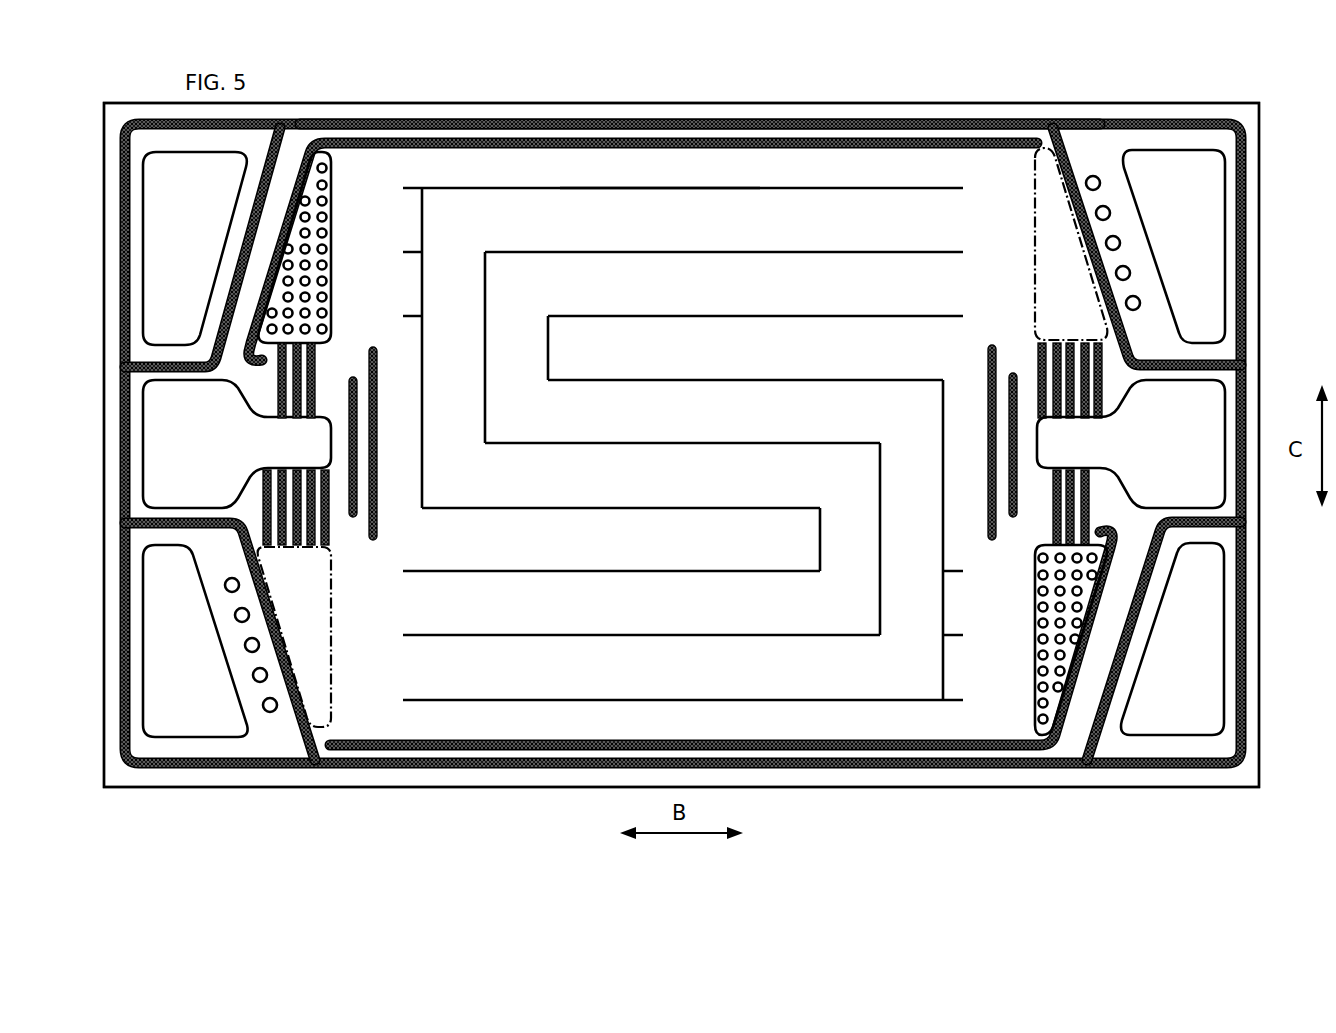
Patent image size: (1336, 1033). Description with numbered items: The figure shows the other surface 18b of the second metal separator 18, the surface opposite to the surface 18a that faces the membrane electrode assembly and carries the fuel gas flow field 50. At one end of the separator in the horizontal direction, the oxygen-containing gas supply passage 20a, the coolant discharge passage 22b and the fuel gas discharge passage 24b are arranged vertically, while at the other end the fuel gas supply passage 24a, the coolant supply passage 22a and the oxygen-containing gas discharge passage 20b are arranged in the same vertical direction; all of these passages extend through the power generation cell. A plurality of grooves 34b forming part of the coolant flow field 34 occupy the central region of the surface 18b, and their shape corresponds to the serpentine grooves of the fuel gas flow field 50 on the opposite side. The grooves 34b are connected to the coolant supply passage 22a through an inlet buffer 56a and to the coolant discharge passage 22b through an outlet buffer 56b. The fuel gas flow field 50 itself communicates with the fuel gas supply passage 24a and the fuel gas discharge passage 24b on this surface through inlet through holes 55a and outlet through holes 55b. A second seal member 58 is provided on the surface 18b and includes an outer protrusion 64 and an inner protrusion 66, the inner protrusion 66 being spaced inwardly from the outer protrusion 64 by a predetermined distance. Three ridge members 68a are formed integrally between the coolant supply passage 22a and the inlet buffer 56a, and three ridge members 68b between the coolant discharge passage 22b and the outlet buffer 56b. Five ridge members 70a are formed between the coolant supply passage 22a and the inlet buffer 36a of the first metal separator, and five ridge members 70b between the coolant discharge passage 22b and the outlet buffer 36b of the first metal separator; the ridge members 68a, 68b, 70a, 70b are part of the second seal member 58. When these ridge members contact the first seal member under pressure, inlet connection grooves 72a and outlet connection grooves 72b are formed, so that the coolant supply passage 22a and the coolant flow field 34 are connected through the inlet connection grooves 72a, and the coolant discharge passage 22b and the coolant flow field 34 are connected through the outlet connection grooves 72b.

The second metal separator 18 is at (1024, 77).
The surface 18a is at (975, 772).
The other surface 18b is at (925, 772).
The oxygen-containing gas supply passage 20a is at (195, 248).
The oxygen-containing gas discharge passage 20b is at (1172, 639).
The coolant supply passage 22a is at (1131, 444).
The coolant discharge passage 22b is at (237, 444).
The fuel gas supply passage 24a is at (1174, 246).
The fuel gas discharge passage 24b is at (195, 641).
The coolant flow field 34 is at (824, 182).
The grooves 34b is at (757, 186).
The inlet buffer 36a is at (1071, 244).
The outlet buffer 36b is at (294, 637).
The fuel gas flow field 50 is at (683, 376).
The inlet through holes 55a is at (1120, 240).
The outlet through holes 55b is at (263, 705).
The inlet buffer 56a is at (1082, 626).
The outlet buffer 56b is at (268, 311).
The second seal member 58 is at (916, 117).
The outer protrusion 64 is at (615, 126).
The inner protrusion 66 is at (678, 141).
The ridge members 68a is at (1055, 490).
The ridge members 68b is at (312, 418).
The ridge members 70a is at (1104, 384).
The ridge members 70b is at (266, 503).
The inlet connection grooves 72a is at (1032, 473).
The outlet connection grooves 72b is at (340, 409).